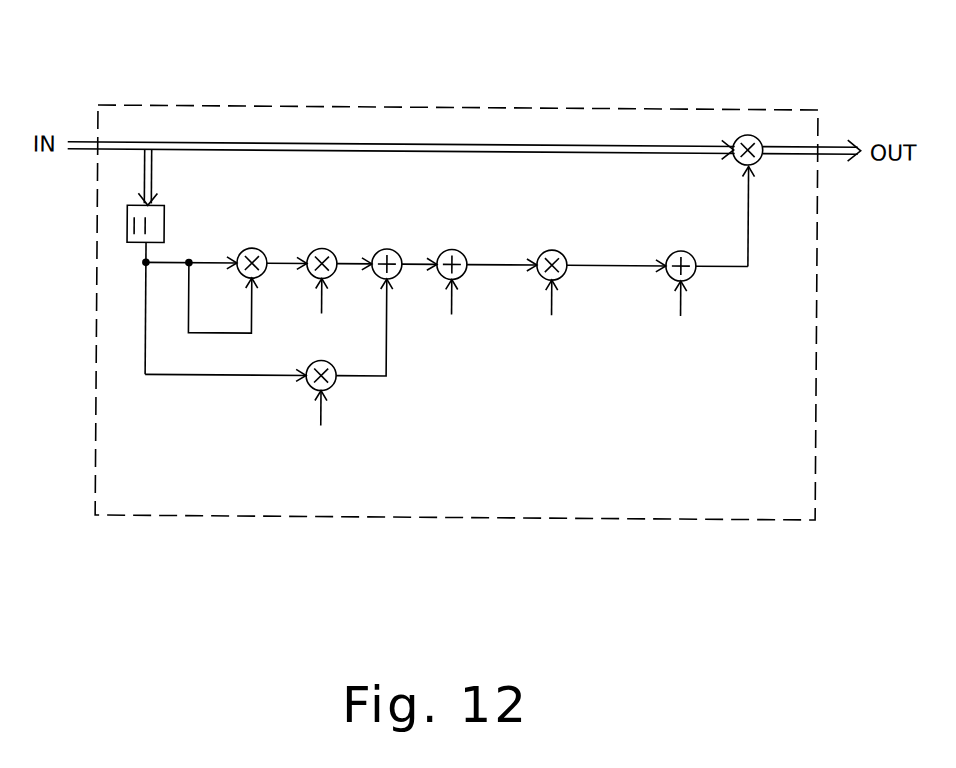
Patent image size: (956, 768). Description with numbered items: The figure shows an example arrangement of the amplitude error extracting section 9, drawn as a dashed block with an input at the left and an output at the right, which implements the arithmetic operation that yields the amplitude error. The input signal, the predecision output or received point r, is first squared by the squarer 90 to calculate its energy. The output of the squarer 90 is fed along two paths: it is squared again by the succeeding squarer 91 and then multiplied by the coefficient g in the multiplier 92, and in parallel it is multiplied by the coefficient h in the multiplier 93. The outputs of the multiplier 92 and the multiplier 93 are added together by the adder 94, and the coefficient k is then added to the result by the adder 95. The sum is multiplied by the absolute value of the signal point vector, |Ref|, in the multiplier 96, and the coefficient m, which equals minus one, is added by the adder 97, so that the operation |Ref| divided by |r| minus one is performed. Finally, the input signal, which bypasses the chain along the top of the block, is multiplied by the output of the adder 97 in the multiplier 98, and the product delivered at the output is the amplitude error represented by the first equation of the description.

The amplitude error extracting section 9 is at (683, 108).
The squarer 90 is at (165, 218).
The squarer 91 is at (255, 247).
The multiplier 92 is at (323, 247).
The multiplier 93 is at (335, 384).
The adder 94 is at (388, 247).
The adder 95 is at (453, 247).
The multiplier 96 is at (553, 247).
The adder 97 is at (682, 247).
The multiplier 98 is at (758, 157).